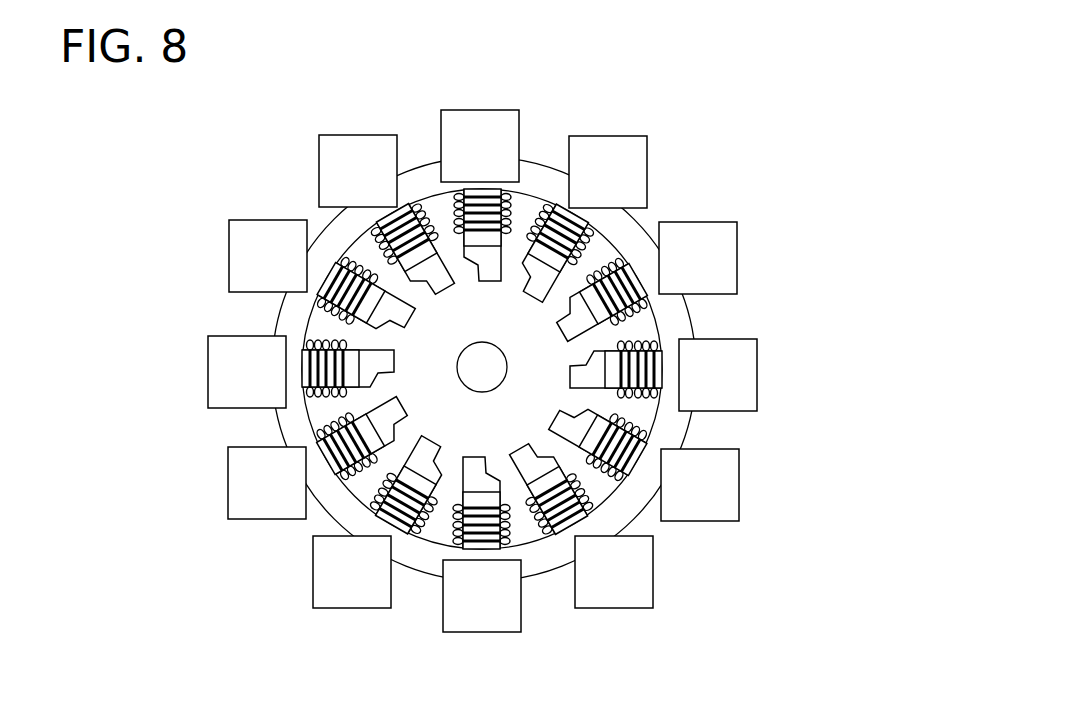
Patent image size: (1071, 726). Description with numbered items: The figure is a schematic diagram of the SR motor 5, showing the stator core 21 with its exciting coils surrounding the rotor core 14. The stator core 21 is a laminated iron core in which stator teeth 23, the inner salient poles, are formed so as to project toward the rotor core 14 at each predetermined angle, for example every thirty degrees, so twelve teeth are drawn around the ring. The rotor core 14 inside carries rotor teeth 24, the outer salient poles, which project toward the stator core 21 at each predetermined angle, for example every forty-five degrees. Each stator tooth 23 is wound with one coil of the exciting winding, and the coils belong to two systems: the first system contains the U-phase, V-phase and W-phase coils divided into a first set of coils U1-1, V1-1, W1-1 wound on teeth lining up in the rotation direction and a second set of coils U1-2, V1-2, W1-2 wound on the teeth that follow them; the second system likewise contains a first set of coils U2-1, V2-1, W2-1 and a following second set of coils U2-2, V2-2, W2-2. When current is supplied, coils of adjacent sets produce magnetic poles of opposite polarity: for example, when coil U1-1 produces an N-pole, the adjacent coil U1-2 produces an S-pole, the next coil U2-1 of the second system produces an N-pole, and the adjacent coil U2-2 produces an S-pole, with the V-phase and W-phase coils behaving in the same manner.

The SR motor 5 is at (481, 345).
The rotor core 14 is at (420, 290).
The stator core 21 is at (550, 158).
The stator teeth 23 is at (545, 250).
The rotor teeth 24 is at (575, 388).
The U-phase coil of first set, first system U1-1 is at (508, 210).
The U-phase coil of second set, first system U1-2 is at (660, 400).
The V-phase coil of first set, first system V1-1 is at (600, 238).
The V-phase coil of second set, first system V1-2 is at (626, 490).
The W-phase coil of first set, first system W1-1 is at (605, 310).
The W-phase coil of second set, first system W1-2 is at (530, 548).
The U-phase coil of first set, second system U2-1 is at (455, 545).
The U-phase coil of second set, second system U2-2 is at (304, 330).
The V-phase coil of first set, second system V2-1 is at (340, 485).
The V-phase coil of second set, second system V2-2 is at (340, 250).
The W-phase coil of first set, second system W2-1 is at (306, 410).
The W-phase coil of second set, second system W2-2 is at (428, 212).